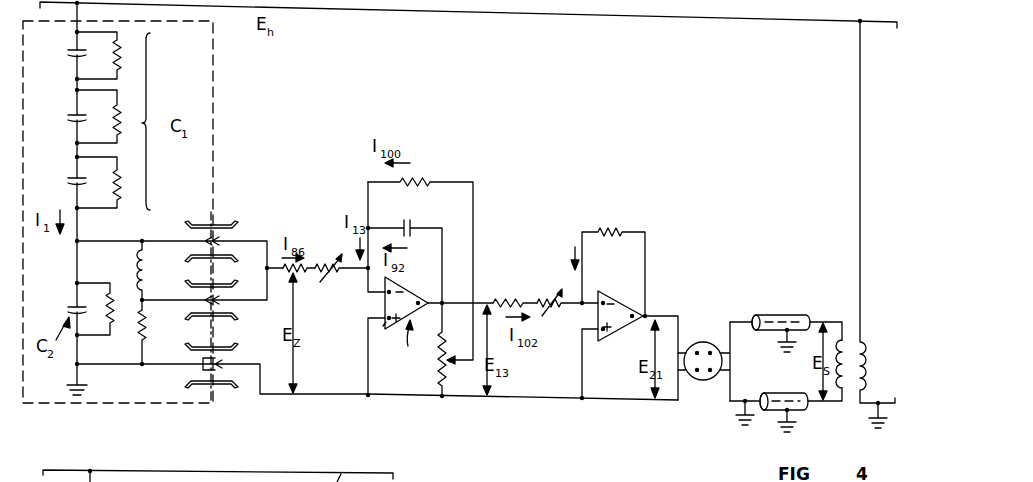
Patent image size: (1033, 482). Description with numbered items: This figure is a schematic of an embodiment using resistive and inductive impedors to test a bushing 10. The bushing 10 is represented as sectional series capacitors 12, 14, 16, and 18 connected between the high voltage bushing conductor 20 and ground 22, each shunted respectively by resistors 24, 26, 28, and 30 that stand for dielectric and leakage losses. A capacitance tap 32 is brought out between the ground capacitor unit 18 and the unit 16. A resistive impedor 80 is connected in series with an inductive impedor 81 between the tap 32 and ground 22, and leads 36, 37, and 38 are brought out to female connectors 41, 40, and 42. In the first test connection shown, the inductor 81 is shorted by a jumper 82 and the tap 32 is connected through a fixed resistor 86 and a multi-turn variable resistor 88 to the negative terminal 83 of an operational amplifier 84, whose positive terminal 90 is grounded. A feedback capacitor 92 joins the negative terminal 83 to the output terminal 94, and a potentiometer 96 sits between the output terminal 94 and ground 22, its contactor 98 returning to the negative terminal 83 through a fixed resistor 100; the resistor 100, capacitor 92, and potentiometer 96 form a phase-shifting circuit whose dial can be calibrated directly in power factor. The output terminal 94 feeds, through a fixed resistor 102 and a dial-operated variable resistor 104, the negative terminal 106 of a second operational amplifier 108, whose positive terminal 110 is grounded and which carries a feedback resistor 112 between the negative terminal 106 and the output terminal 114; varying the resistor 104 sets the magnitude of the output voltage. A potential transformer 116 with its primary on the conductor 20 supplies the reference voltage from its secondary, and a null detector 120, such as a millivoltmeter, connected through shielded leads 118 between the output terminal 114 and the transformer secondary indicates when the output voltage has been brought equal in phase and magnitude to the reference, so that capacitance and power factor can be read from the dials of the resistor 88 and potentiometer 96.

The bushing 10 is at (217, 137).
The sectional series capacitor 12 is at (70, 52).
The sectional series capacitor 14 is at (70, 118).
The sectional series capacitor 16 is at (70, 182).
The ground capacitor unit 18 is at (68, 309).
The high voltage bushing conductor 20 is at (366, 10).
The ground 22 is at (80, 366).
The resistor 24 is at (118, 60).
The resistor 26 is at (118, 118).
The resistor 28 is at (118, 195).
The resistor 30 is at (112, 323).
The capacitance tap 32 is at (74, 243).
The lead 36 is at (163, 241).
The lead 37 is at (175, 299).
The lead 38 is at (165, 367).
The female connector 40 is at (222, 320).
The female connector 41 is at (226, 232).
The female connector 42 is at (222, 388).
The resistive impedor 80 is at (147, 337).
The inductive impedor 81 is at (137, 266).
The jumper 82 is at (265, 270).
The negative terminal 83 is at (395, 283).
The operational amplifier 84 is at (411, 342).
The fixed resistor 86 is at (298, 273).
The variable resistor 88 is at (334, 277).
The positive terminal 90 is at (389, 324).
The feedback capacitor 92 is at (411, 226).
The amplifier output terminal 94 is at (419, 307).
The potentiometer 96 is at (439, 355).
The contactor 98 is at (447, 367).
The fixed resistor 100 is at (425, 182).
The fixed resistor 102 is at (505, 300).
The variable resistor 104 is at (553, 300).
The negative terminal 106 is at (604, 300).
The second operational amplifier 108 is at (626, 297).
The positive terminal 110 is at (604, 340).
The feedback resistor 112 is at (622, 230).
The output terminal 114 is at (631, 321).
The potential transformer 116 is at (843, 338).
The shielded leads 118 is at (773, 393).
The null detector 120 is at (699, 343).